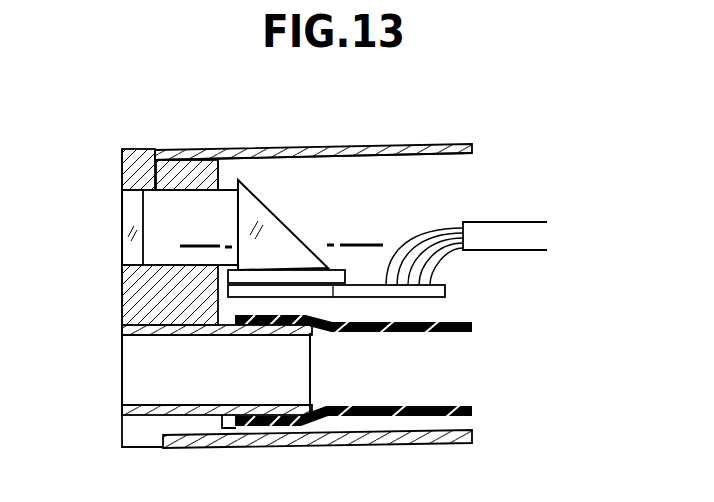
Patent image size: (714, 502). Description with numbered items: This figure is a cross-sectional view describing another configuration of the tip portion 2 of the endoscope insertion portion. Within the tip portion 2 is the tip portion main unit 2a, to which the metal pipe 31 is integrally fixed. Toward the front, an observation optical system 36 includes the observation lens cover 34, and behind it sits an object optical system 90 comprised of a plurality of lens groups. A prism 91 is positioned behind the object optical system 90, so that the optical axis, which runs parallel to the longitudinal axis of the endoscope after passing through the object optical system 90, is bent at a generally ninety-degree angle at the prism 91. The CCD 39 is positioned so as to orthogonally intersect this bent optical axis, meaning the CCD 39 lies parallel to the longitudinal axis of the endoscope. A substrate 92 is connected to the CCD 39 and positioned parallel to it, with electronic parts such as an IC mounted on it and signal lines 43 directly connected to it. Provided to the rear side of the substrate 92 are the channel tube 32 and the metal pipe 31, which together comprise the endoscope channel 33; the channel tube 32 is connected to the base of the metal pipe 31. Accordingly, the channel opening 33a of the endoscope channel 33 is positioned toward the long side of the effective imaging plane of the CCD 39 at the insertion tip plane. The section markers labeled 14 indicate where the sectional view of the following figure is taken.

The tip portion 2 is at (342, 137).
The tip portion main unit 2a is at (141, 170).
The section line (FIG. 14) 14 is at (369, 242).
The metal pipe 31 is at (210, 408).
The channel tube 32 is at (427, 407).
The endoscope channel 33 is at (160, 380).
The channel opening 33a is at (123, 353).
The observation lens cover 34 is at (132, 203).
The observation optical system 36 is at (122, 248).
The CCD 39 is at (311, 278).
The signal lines 43 is at (449, 228).
The object optical system 90 is at (157, 202).
The prism 91 is at (274, 202).
The substrate 92 is at (428, 298).